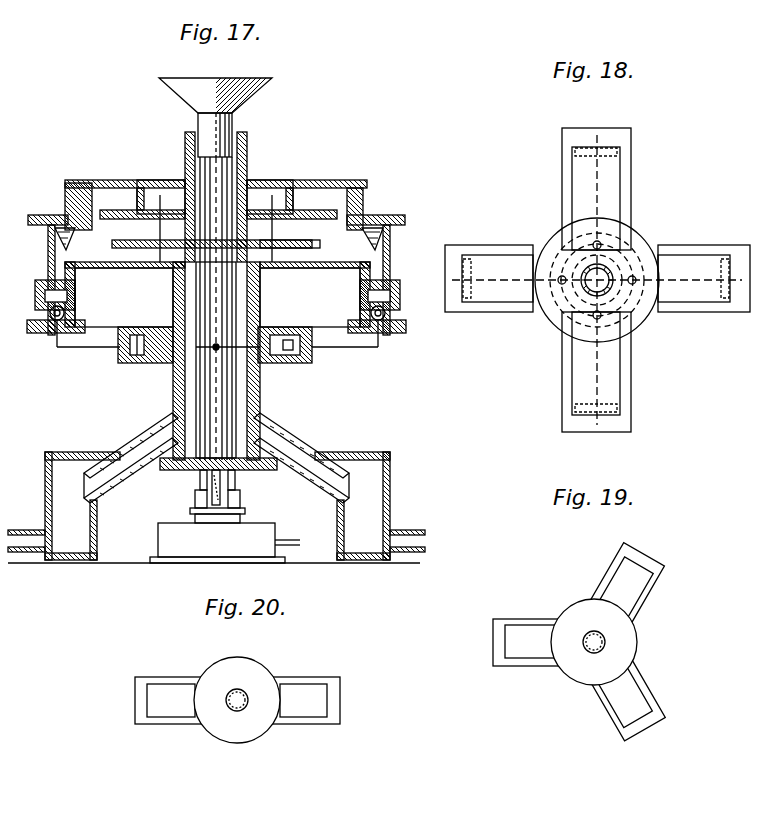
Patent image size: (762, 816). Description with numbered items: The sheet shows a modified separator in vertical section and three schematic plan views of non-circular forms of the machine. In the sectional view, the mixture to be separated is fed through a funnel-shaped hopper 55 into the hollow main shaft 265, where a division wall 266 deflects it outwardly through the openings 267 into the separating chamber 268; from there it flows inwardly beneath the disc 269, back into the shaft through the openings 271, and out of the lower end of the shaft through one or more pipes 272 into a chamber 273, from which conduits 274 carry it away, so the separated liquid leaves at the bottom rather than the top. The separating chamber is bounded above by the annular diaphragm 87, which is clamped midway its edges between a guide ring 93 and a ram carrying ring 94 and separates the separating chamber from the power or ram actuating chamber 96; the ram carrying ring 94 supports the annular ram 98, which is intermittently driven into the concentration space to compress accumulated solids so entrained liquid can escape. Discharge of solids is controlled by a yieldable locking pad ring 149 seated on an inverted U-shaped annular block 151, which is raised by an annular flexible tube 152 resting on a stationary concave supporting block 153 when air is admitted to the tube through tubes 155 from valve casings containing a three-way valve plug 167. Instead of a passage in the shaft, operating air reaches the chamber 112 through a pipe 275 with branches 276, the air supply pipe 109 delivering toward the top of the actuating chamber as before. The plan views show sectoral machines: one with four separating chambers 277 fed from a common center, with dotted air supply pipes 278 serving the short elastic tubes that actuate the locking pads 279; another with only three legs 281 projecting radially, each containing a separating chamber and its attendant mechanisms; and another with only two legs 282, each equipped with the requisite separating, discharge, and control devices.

In FIG. 17, the funnel-shaped hopper 55 is at (262, 90).
In FIG. 17, the diaphragm 87 is at (100, 210).
In FIG. 17, the guide ring 93 is at (78, 182).
In FIG. 17, the ram carrying ring 94 is at (390, 240).
In FIG. 17, the power or ram actuating chamber 96 is at (345, 225).
In FIG. 17, the ram 98 is at (48, 246).
In FIG. 17, the air supply pipe 109 is at (160, 302).
In FIG. 17, the chamber 112 is at (285, 327).
In FIG. 17, the locking pad ring 149 is at (35, 292).
In FIG. 17, the annular block 151 is at (68, 310).
In FIG. 17, the annular flexible tube 152 is at (405, 325).
In FIG. 17, the stationary concave supporting block 153 is at (378, 330).
In FIG. 17, the tubes 155 is at (72, 350).
In FIG. 17, the valve plug 167 is at (135, 363).
In FIG. 17, the main shaft 265 is at (260, 388).
In FIG. 17, the division wall 266 is at (214, 250).
In FIG. 17, the openings 267 is at (180, 238).
In FIG. 17, the separating chamber 268 is at (306, 243).
In FIG. 17, the disc 269 is at (315, 294).
In FIG. 17, the openings 271 is at (125, 294).
In FIG. 17, the pipes 272 is at (148, 440).
In FIG. 17, the chamber 273 is at (365, 500).
In FIG. 17, the conduits 274 is at (420, 528).
In FIG. 17, the pipe 275 is at (210, 385).
In FIG. 17, the branches 276 is at (228, 343).
In FIG. 18, the separating chambers 277 is at (672, 245).
In FIG. 18, the air supply pipes 278 is at (595, 185).
In FIG. 18, the locking pads 279 is at (610, 148).
In FIG. 19, the legs 281 is at (600, 580).
In FIG. 20, the legs 282 is at (175, 677).